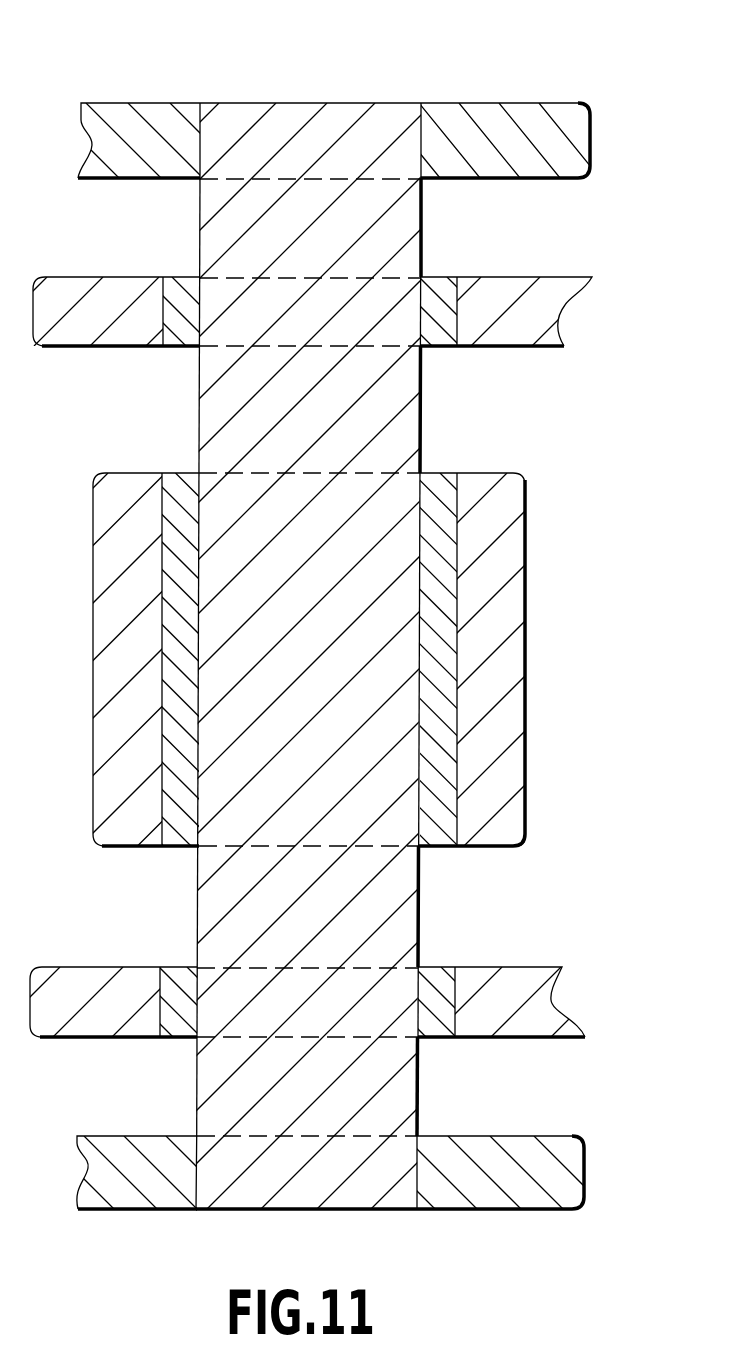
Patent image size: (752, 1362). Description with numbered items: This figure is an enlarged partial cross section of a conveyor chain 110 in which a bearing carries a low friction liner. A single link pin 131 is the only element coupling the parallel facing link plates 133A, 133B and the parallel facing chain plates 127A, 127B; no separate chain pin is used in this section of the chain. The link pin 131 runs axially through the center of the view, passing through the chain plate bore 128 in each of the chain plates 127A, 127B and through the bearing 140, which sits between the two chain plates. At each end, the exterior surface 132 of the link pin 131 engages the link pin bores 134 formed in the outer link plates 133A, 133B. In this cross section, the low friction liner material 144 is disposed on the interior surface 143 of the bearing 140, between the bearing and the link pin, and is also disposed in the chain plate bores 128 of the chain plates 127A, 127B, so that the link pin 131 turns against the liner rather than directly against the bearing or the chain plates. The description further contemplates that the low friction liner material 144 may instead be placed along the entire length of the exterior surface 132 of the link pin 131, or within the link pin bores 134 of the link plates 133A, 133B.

The conveyor chain 110 is at (228, 72).
The link pin 131 is at (210, 1088).
The exterior surface 132 is at (196, 903).
The link pin bores 134 is at (421, 113).
The link plate 133A is at (516, 103).
The link plate 133B is at (478, 1212).
The chain plate 127A is at (543, 278).
The chain plate 127B is at (510, 1042).
The chain plate bore 128 is at (455, 296).
The bearing 140 is at (472, 685).
The interior surface 143 is at (176, 474).
The low friction liner material 144 is at (443, 485).